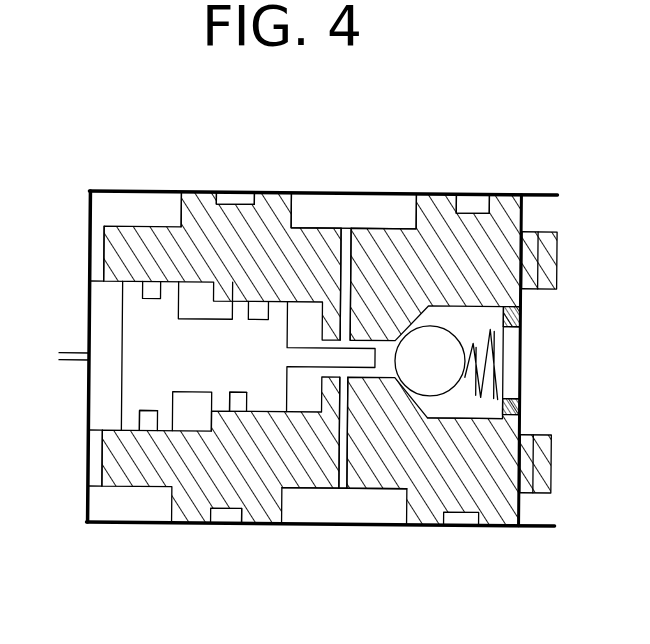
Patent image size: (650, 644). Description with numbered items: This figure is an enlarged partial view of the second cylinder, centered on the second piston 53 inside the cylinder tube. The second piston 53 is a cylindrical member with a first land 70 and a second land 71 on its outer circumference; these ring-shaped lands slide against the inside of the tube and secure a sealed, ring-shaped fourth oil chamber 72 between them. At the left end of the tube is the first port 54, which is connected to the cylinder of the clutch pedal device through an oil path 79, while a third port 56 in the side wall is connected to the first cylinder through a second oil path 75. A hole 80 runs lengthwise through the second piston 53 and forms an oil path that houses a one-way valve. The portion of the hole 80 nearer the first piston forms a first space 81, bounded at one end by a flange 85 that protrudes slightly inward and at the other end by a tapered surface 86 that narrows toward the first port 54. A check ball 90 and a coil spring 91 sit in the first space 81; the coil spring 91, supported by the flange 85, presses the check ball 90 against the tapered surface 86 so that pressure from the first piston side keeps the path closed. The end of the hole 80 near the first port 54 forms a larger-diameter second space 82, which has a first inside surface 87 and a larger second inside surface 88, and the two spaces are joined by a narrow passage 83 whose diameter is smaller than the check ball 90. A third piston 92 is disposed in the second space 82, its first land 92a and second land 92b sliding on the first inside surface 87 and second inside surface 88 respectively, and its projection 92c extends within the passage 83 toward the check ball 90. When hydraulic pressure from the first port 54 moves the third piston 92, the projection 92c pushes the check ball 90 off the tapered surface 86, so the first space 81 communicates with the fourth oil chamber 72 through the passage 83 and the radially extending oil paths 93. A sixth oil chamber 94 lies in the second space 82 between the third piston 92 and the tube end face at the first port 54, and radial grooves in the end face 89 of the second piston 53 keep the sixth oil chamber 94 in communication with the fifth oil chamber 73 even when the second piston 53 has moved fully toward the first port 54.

The second piston 53 is at (295, 521).
The first port 54 is at (85, 352).
The third port 56 is at (405, 190).
The first land 70 is at (472, 192).
The second land 71 is at (237, 190).
The fourth oil chamber 72 is at (315, 205).
The fifth oil chamber 73 is at (133, 206).
The second oil path 75 is at (396, 190).
The oil path 79 is at (72, 366).
The hole 80 is at (529, 369).
The first space 81 is at (547, 284).
The second space 82 is at (105, 398).
The passage 83 is at (415, 425).
The flange 85 is at (514, 392).
The tapered surface 86 is at (432, 405).
The first inside surface 87 is at (270, 523).
The second inside surface 88 is at (183, 525).
The end face 89 is at (82, 468).
The check ball 90 is at (432, 357).
The coil spring 91 is at (498, 358).
The third piston 92 is at (178, 353).
The first land 92a is at (230, 416).
The second land 92b is at (148, 433).
The projection 92c is at (343, 193).
The oil paths 93 is at (344, 385).
The sixth oil chamber 94 is at (119, 334).